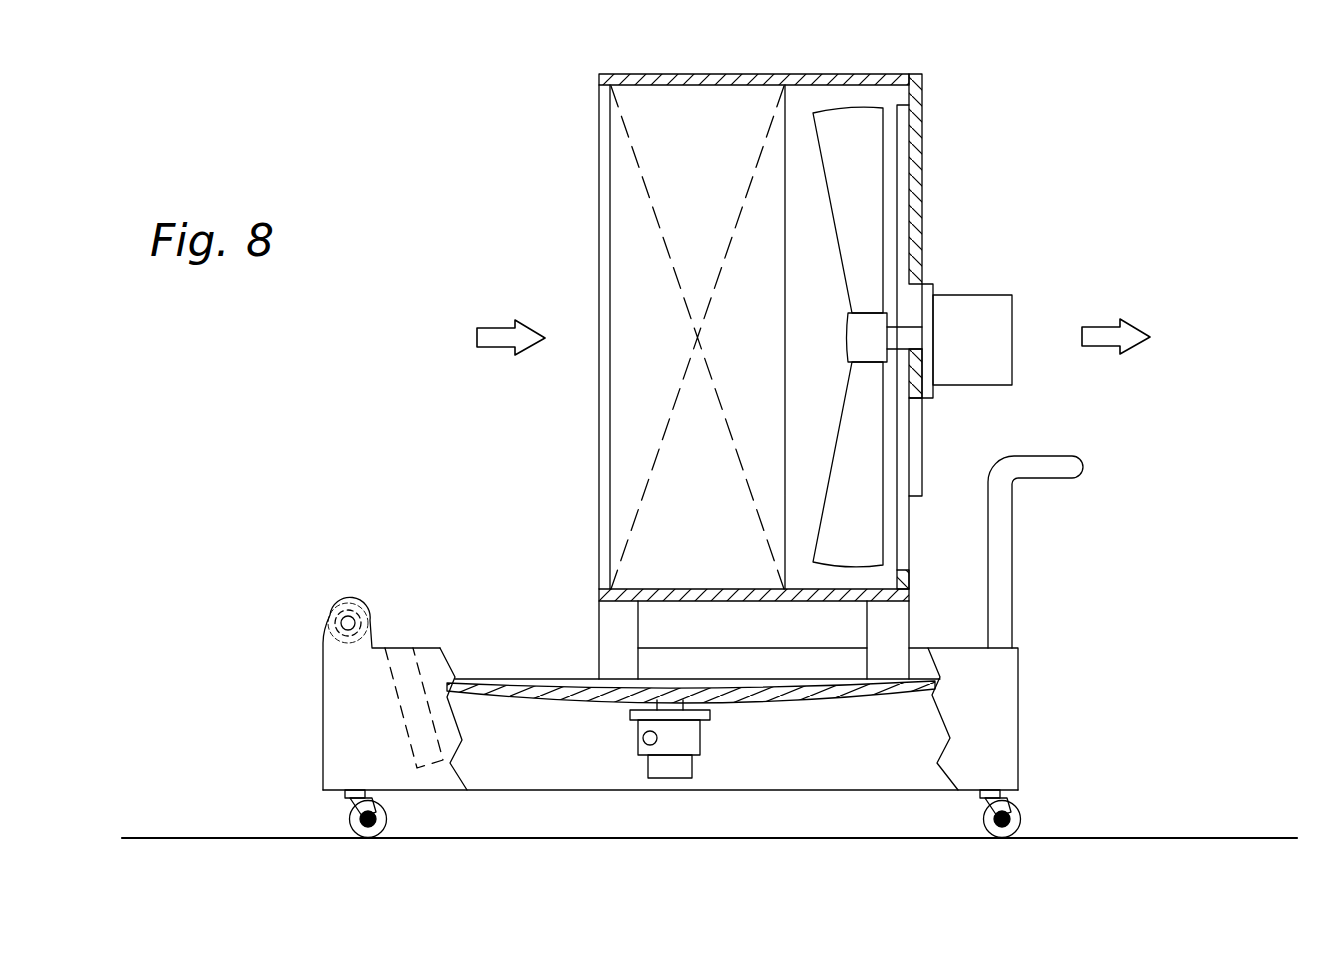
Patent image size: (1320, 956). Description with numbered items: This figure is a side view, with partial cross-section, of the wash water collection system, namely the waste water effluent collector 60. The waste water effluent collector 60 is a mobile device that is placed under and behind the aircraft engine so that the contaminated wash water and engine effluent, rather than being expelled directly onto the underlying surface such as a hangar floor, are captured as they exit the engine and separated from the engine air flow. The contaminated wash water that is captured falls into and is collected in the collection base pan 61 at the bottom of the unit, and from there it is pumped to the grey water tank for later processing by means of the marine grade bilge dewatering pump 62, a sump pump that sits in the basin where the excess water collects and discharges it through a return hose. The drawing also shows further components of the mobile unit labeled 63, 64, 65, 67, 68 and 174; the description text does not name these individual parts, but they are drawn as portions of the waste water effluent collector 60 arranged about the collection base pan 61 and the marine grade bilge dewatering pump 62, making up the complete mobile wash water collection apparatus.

The waste water effluent collector 60 is at (512, 158).
The collection base pan 61 is at (520, 647).
The marine grade bilge (sump) dewatering pump 62 is at (733, 73).
The motor 63 is at (700, 741).
The fan blade 64 is at (857, 406).
The cart base 65 is at (1018, 719).
The handle 67 is at (1086, 463).
The pivot 68 is at (344, 601).
The compartment 174 is at (410, 741).